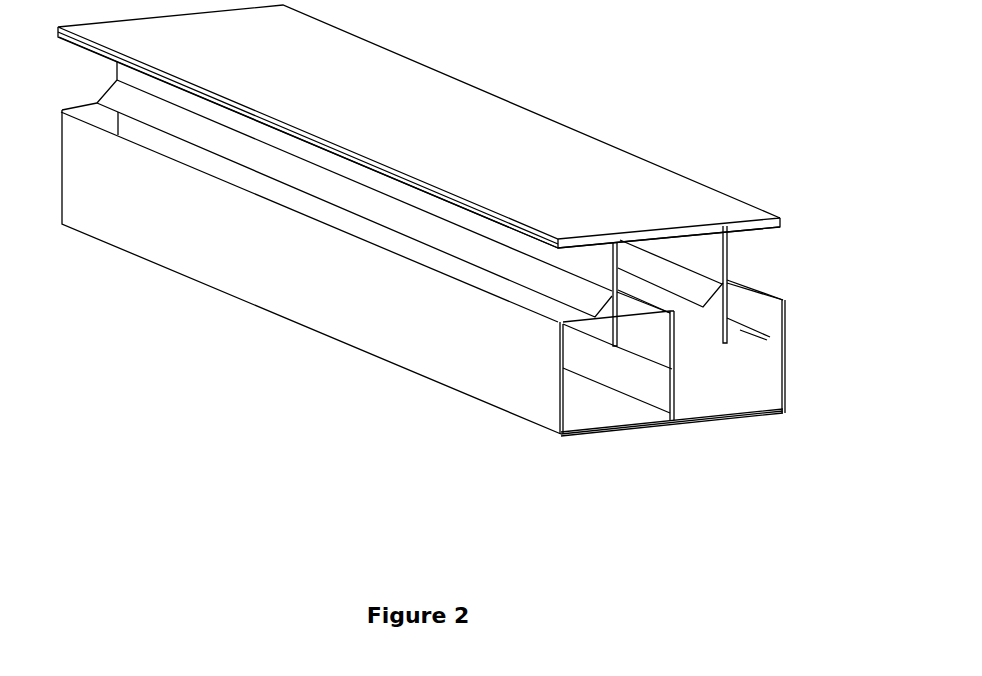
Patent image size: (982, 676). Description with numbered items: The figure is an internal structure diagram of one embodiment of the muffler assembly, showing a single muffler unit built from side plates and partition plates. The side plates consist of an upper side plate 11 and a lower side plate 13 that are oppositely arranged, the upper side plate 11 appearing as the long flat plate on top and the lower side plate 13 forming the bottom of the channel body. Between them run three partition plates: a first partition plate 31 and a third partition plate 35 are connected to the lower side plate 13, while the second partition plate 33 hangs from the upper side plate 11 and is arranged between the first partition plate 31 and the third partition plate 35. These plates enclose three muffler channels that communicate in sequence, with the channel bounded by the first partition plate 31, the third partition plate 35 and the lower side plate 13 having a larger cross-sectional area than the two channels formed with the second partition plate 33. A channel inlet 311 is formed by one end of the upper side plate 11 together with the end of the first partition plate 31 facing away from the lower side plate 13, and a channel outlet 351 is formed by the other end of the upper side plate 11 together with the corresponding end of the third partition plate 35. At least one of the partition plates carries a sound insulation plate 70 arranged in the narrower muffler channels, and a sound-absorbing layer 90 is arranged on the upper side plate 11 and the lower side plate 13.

The upper side plate 11 is at (667, 203).
The lower side plate 13 is at (703, 420).
The first partition plate 31 is at (515, 362).
The channel inlet 311 is at (86, 74).
The second partition plate 33 is at (598, 262).
The third partition plate 35 is at (760, 367).
The channel outlet 351 is at (769, 264).
The sound insulation plate 70 is at (690, 283).
The sound-absorbing layer 90 is at (703, 224).